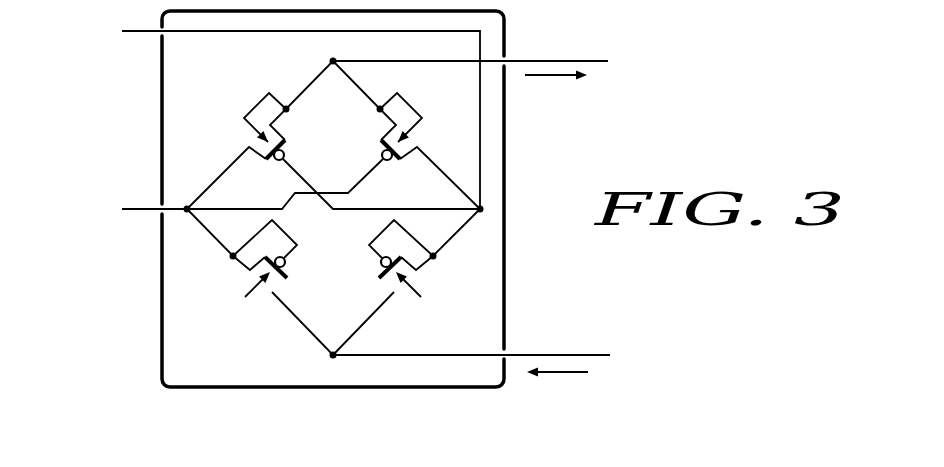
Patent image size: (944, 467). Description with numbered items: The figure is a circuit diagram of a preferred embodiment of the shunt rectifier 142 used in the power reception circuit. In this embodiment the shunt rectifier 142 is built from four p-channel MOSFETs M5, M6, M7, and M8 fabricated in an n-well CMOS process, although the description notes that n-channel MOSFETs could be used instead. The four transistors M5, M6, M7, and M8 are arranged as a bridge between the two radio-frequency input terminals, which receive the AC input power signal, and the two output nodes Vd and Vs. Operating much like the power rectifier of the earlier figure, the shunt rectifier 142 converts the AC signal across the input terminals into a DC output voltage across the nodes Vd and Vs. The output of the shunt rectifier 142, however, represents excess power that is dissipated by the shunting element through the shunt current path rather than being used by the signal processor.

The shunt rectifier 142 is at (715, 283).
The p-channel MOSFET M5 is at (261, 146).
The p-channel MOSFET M6 is at (405, 146).
The p-channel MOSFET M7 is at (242, 275).
The p-channel MOSFET M8 is at (428, 275).